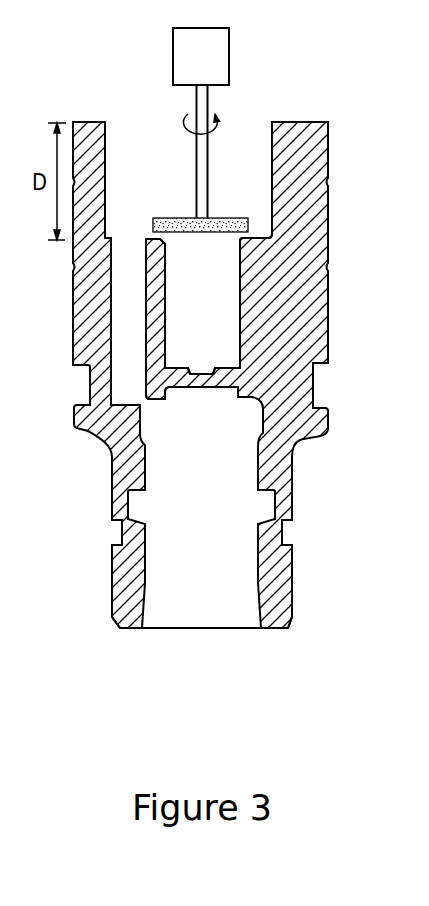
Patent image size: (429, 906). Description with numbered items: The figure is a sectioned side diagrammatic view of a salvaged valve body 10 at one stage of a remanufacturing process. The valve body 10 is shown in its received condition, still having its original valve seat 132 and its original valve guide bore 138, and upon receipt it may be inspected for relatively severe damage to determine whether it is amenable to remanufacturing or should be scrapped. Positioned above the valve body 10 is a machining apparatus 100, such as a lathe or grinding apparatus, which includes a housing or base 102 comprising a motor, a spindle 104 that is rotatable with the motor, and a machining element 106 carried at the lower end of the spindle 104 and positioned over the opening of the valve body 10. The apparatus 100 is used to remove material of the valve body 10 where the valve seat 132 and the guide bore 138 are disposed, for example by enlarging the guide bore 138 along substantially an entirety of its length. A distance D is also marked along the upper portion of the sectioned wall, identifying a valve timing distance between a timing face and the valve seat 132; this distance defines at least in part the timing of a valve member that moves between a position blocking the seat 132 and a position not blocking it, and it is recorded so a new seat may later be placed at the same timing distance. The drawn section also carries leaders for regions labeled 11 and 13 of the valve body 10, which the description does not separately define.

The machining apparatus 100 is at (189, 123).
The housing or base 102 is at (221, 54).
The spindle 104 is at (197, 101).
The machining element 106 is at (172, 218).
The valve body 10 is at (87, 418).
The upper collar wall 11 is at (318, 121).
The nozzle end 13 is at (132, 636).
The valve seat 132 is at (240, 246).
The valve guide bore 138 is at (240, 317).